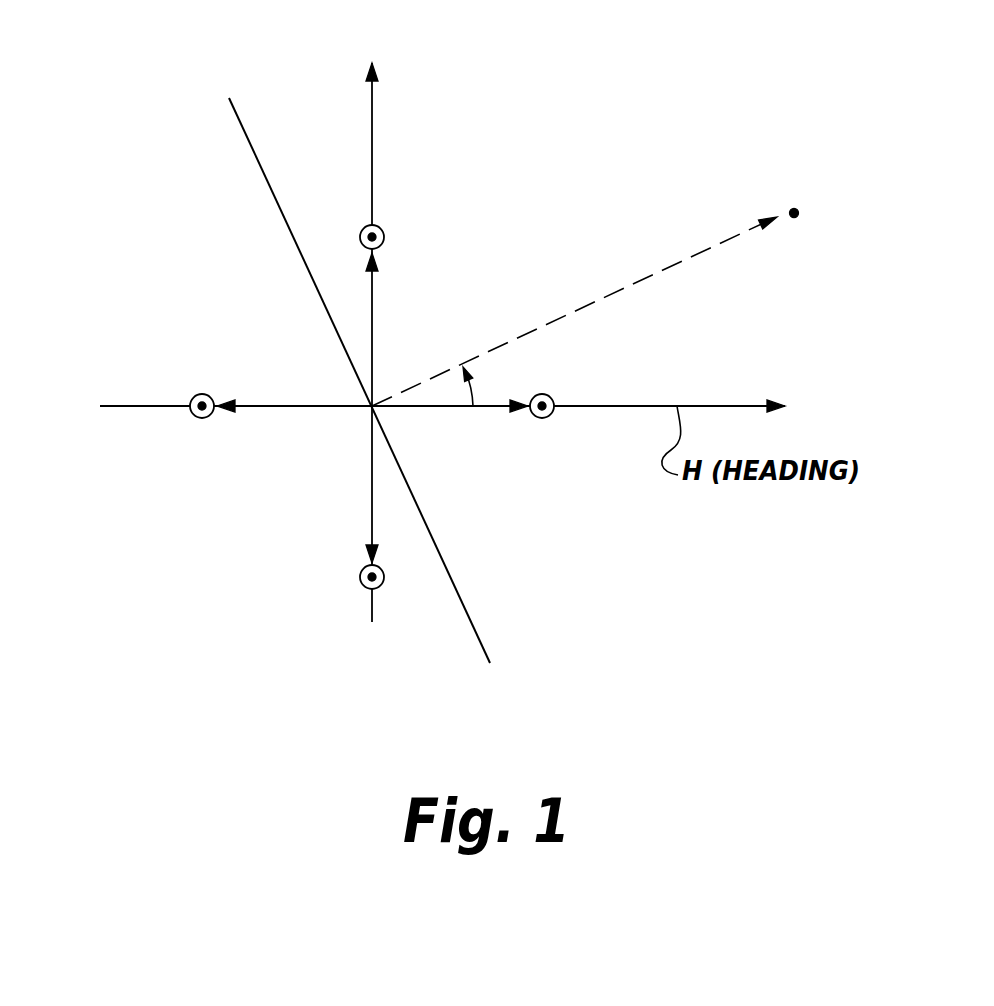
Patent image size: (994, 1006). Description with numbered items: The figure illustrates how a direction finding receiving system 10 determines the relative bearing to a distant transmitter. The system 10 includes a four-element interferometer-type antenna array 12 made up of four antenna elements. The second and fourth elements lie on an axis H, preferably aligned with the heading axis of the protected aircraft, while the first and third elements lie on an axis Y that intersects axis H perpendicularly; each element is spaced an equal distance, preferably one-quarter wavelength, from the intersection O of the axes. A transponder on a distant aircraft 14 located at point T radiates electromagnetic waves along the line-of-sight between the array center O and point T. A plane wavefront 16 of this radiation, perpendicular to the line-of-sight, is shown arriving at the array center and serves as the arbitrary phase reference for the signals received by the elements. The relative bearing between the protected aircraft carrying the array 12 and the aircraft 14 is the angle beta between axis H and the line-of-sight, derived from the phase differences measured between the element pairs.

The direction finding receiving system 10 is at (675, 81).
The four-element interferometer-type antenna array 12 is at (474, 266).
The aircraft 14 is at (795, 133).
The plane wavefront 16 is at (472, 623).